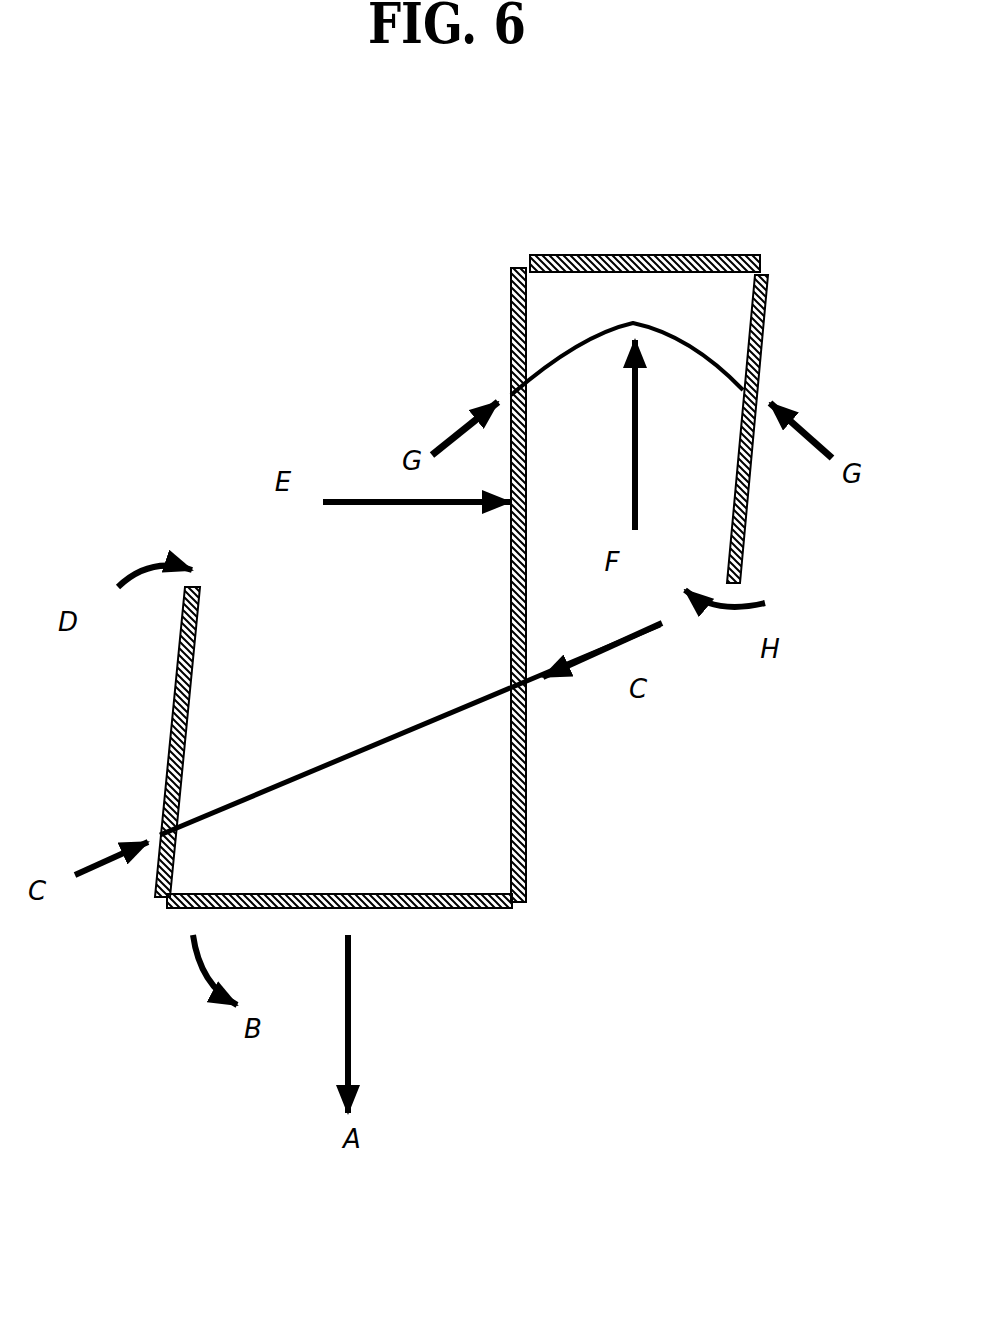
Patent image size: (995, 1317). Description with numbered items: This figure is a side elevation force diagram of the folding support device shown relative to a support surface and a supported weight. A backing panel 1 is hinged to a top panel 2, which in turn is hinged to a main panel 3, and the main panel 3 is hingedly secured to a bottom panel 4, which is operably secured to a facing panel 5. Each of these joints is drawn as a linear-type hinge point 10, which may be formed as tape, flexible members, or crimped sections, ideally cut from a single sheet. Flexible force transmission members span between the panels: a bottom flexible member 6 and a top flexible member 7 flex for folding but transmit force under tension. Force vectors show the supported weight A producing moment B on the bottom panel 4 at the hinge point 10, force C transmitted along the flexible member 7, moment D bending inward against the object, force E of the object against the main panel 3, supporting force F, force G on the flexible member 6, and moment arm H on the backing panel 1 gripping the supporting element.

The backing panel 1 is at (778, 333).
The top panel 2 is at (682, 248).
The main panel 3 is at (497, 318).
The bottom panel 4 is at (462, 920).
The facing panel 5 is at (168, 710).
The bottom flexible member 6 is at (583, 330).
The top flexible member 7 is at (360, 747).
The hinge point 10 is at (520, 268).